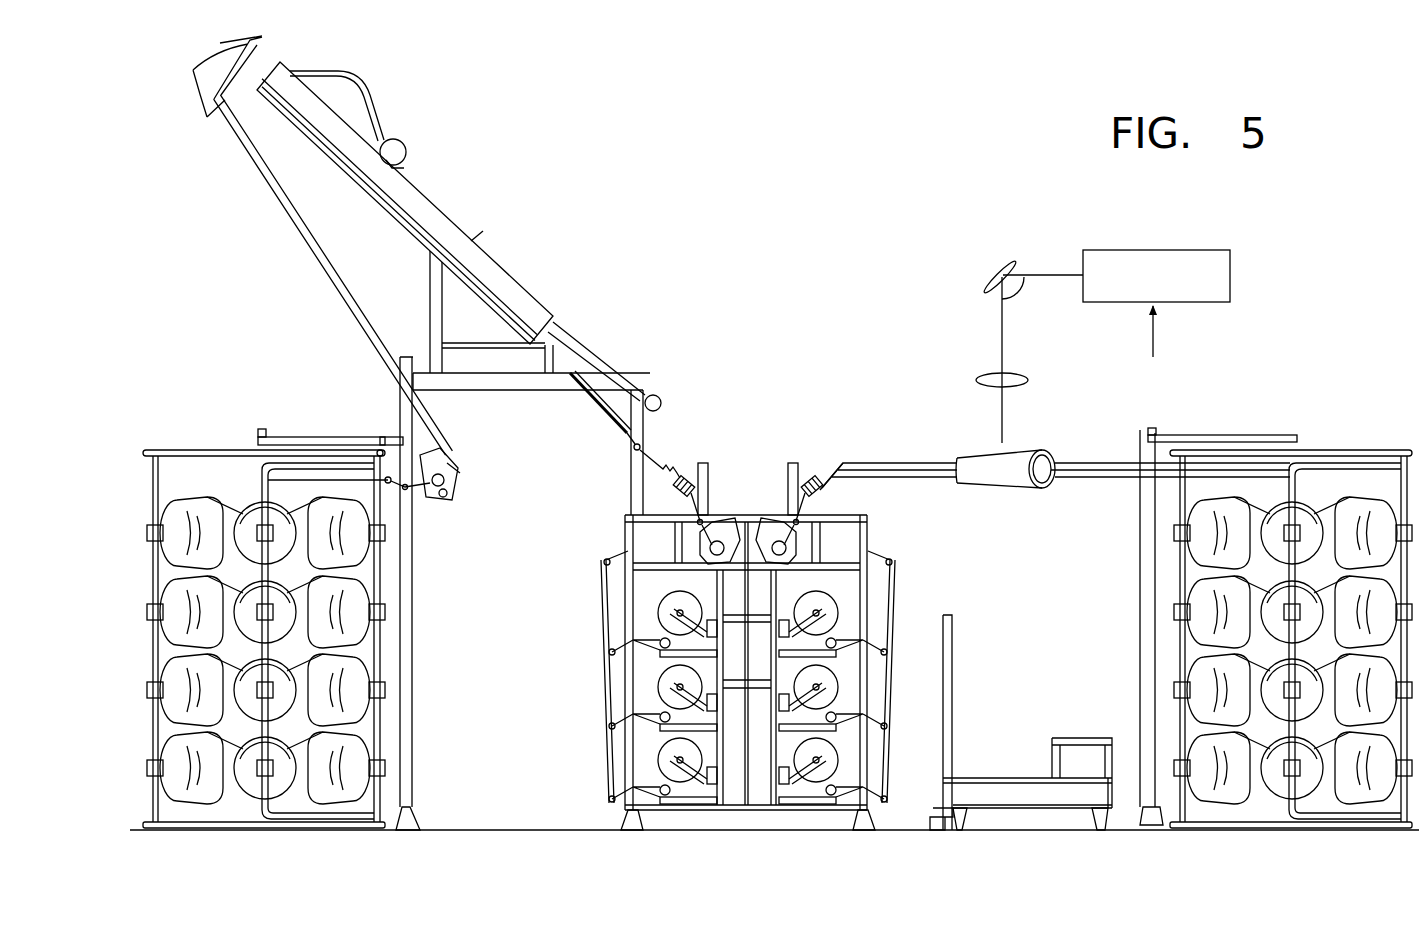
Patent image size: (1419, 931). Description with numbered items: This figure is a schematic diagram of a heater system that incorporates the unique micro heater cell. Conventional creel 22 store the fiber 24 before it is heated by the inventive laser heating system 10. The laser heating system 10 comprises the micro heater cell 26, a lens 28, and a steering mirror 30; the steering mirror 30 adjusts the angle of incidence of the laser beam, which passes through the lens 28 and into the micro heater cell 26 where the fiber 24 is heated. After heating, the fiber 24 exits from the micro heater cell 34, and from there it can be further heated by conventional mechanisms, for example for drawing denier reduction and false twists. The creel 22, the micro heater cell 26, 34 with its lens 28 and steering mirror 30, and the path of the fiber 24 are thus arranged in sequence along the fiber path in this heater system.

The laser heating system 10 is at (1062, 424).
The creel 22 is at (1168, 650).
The fiber 24 is at (1088, 483).
The micro heater cell 26 is at (999, 492).
The lens 28 is at (967, 380).
The steering mirror 30 is at (990, 272).
The micro heater cell 34 is at (1022, 298).